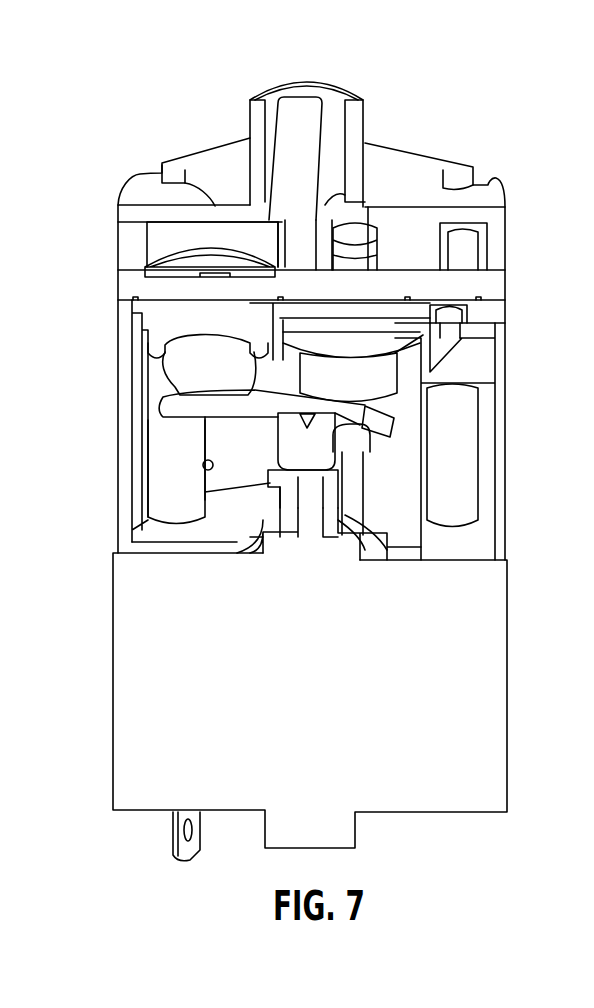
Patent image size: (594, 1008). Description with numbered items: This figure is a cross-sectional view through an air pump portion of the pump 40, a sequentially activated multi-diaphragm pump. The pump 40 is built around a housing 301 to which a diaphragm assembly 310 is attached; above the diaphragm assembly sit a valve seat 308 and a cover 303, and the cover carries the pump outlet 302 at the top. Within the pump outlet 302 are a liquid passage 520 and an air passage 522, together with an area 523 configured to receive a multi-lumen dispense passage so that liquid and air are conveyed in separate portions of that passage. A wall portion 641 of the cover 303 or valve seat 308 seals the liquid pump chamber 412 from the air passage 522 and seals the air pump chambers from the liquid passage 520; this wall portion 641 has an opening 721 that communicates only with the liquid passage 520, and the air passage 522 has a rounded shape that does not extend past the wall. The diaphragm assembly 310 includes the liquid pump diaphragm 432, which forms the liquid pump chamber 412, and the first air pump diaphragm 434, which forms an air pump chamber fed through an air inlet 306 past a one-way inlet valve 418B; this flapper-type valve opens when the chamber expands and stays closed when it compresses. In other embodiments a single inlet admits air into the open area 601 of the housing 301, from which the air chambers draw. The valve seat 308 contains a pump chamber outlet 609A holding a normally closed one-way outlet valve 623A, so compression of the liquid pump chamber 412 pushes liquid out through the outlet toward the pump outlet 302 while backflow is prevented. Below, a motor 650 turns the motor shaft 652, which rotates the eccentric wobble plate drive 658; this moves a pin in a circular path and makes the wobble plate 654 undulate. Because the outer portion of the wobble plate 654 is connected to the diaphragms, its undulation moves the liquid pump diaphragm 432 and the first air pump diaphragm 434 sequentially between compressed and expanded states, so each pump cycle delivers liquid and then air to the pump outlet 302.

The pump 40 is at (124, 93).
The housing 301 is at (497, 470).
The pump outlet 302 is at (363, 118).
The cover 303 is at (492, 200).
The air inlet 306 is at (485, 356).
The valve seat 308 is at (490, 272).
The diaphragm assembly 310 is at (467, 317).
The liquid pump chamber 412 is at (185, 315).
The one-way inlet valve 418B is at (452, 312).
The liquid pump diaphragm 432 is at (198, 365).
The first air pump diaphragm 434 is at (377, 373).
The liquid passage 520 is at (297, 112).
The air passage 522 is at (338, 205).
The area 523 is at (333, 102).
The open area 601 is at (417, 478).
The pump chamber outlet 609A is at (176, 292).
The one-way outlet valve 623A is at (198, 268).
The wall portion 641 is at (206, 235).
The motor 650 is at (440, 680).
The motor shaft 652 is at (310, 515).
The wobble plate 654 is at (185, 412).
The eccentric wobble plate drive 658 is at (280, 506).
The opening 721 is at (270, 212).